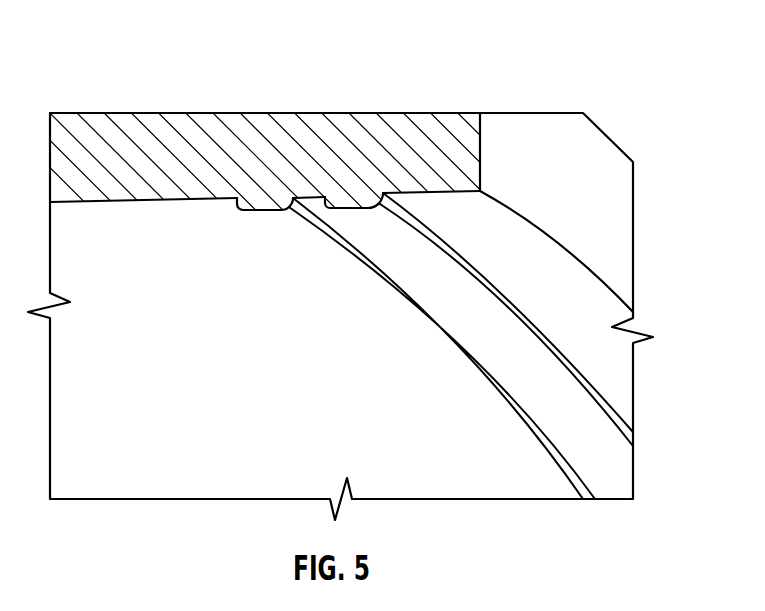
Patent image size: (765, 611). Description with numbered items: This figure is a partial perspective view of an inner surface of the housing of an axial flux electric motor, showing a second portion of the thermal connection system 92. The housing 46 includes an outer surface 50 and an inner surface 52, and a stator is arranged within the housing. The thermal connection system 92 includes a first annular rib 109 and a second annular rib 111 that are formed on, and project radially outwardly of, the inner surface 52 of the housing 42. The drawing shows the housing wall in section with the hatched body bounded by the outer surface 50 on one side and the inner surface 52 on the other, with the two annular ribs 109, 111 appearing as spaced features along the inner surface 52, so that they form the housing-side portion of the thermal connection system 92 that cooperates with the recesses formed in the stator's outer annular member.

The thermal connection system 92 is at (102, 82).
The outer surface 50 is at (285, 112).
The first annular rib 109 is at (264, 206).
The second annular rib 111 is at (362, 190).
The inner surface 52 is at (470, 206).
The housing 46 is at (550, 133).
The housing 42 is at (579, 243).